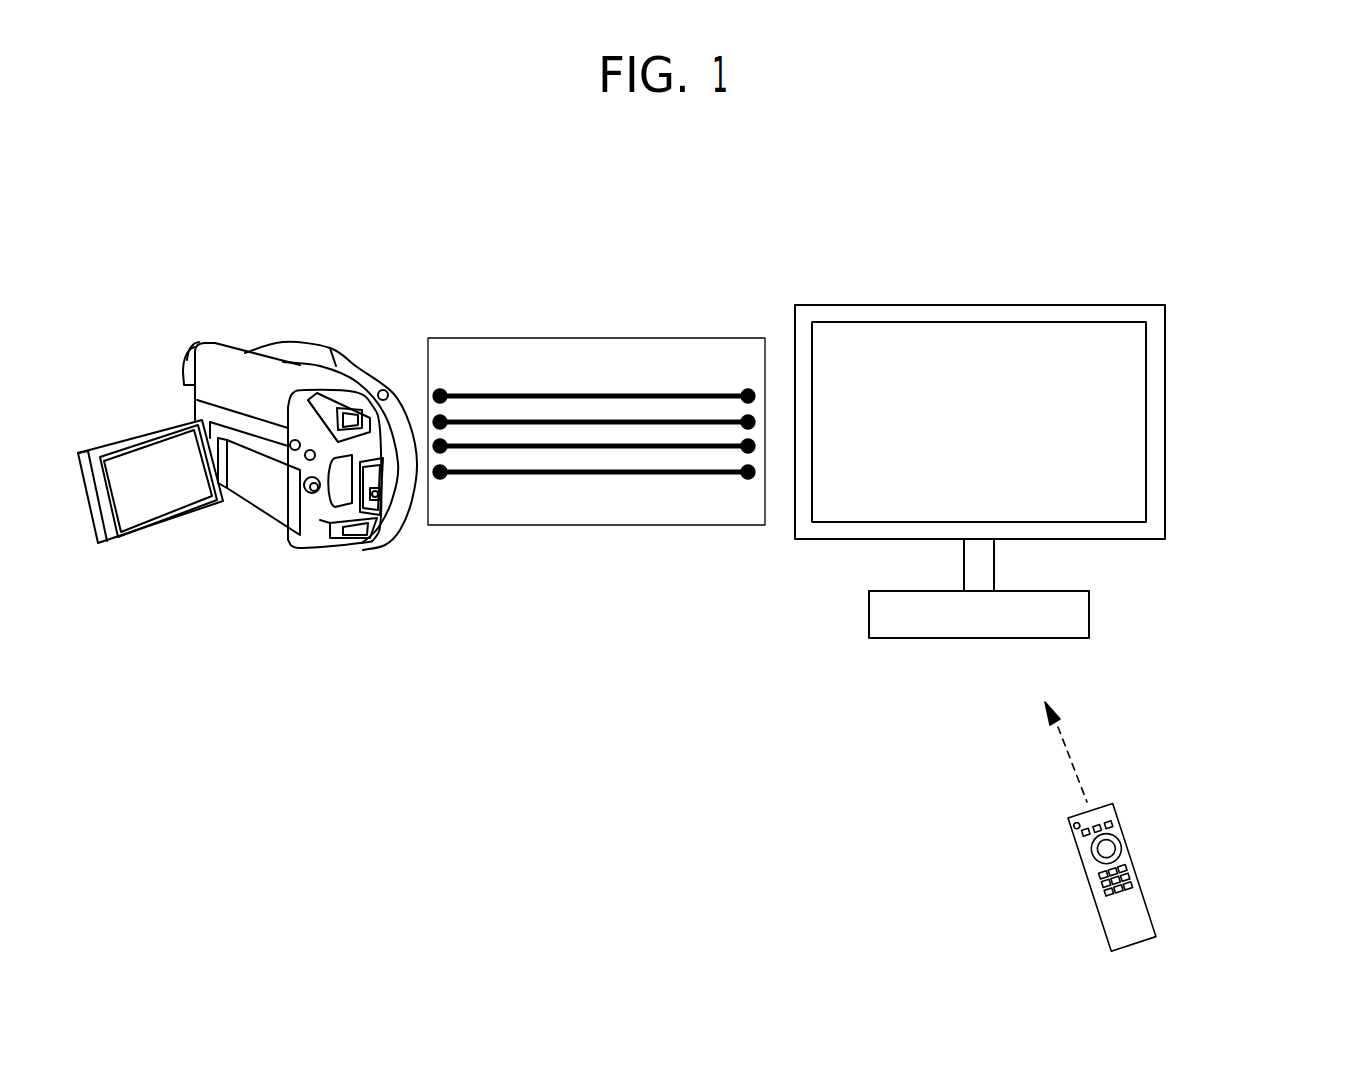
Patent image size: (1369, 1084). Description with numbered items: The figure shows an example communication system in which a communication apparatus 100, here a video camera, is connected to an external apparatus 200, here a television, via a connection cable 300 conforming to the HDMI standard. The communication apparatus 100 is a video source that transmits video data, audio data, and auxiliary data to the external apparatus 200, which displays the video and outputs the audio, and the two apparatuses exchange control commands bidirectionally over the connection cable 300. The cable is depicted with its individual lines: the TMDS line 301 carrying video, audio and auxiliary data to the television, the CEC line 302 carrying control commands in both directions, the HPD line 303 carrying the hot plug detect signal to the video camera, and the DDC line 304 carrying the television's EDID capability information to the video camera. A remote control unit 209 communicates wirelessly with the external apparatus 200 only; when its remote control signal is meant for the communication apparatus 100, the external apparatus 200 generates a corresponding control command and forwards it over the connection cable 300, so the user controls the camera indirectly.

The communication apparatus 100 is at (323, 543).
The external apparatus 200 is at (953, 638).
The remote control unit 209 is at (1080, 863).
The connection cable 300 is at (462, 338).
The TMDS line 301 is at (700, 397).
The CEC line 302 is at (572, 418).
The HPD line 303 is at (698, 447).
The DDC line 304 is at (540, 473).